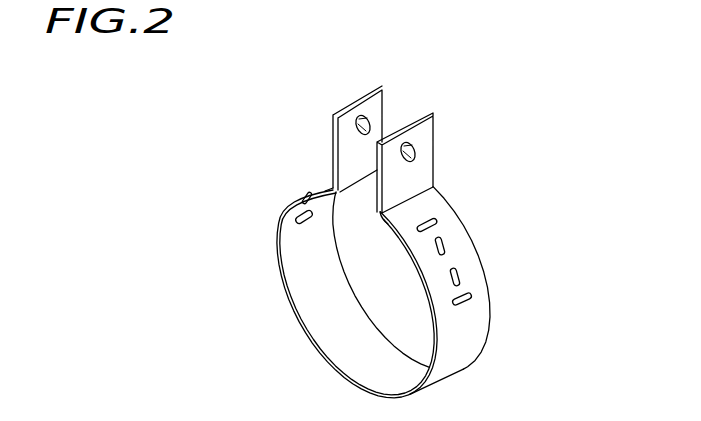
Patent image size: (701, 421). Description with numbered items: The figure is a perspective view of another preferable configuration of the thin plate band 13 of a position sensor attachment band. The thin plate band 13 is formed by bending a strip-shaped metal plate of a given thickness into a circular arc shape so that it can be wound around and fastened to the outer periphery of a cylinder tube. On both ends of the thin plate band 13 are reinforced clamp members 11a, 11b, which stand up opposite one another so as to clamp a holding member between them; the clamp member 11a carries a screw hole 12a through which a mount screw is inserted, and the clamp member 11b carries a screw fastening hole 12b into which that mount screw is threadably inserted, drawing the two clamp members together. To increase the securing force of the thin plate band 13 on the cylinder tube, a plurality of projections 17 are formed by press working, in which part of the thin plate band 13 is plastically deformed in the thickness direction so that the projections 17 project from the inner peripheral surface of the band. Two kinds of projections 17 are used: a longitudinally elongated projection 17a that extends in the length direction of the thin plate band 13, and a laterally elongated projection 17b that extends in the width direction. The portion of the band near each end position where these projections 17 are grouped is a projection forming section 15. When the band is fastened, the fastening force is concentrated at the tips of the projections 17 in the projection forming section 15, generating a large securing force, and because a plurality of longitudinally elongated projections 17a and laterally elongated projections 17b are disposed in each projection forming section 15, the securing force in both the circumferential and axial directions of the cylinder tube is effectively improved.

The clamp member 11a is at (427, 132).
The clamp member 11b is at (344, 110).
The screw hole 12a is at (416, 152).
The screw fastening hole 12b is at (370, 124).
The thin plate band 13 is at (455, 332).
The projection forming section 15 is at (465, 242).
The projections 17 is at (437, 221).
The longitudinally elongated projection 17a is at (305, 206).
The laterally elongated projection 17b is at (300, 228).